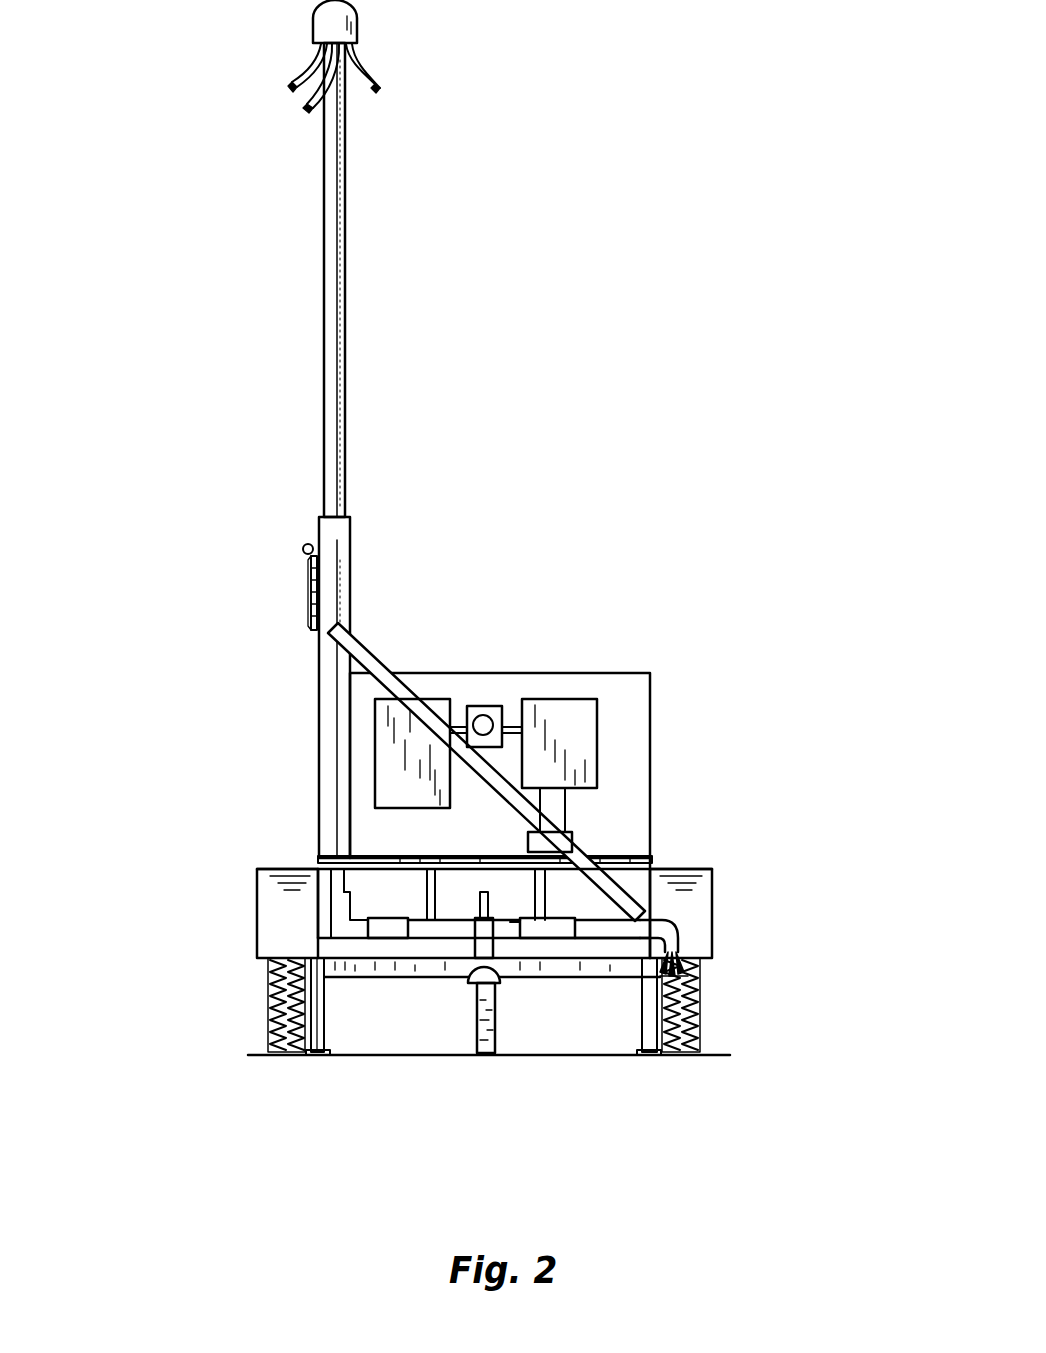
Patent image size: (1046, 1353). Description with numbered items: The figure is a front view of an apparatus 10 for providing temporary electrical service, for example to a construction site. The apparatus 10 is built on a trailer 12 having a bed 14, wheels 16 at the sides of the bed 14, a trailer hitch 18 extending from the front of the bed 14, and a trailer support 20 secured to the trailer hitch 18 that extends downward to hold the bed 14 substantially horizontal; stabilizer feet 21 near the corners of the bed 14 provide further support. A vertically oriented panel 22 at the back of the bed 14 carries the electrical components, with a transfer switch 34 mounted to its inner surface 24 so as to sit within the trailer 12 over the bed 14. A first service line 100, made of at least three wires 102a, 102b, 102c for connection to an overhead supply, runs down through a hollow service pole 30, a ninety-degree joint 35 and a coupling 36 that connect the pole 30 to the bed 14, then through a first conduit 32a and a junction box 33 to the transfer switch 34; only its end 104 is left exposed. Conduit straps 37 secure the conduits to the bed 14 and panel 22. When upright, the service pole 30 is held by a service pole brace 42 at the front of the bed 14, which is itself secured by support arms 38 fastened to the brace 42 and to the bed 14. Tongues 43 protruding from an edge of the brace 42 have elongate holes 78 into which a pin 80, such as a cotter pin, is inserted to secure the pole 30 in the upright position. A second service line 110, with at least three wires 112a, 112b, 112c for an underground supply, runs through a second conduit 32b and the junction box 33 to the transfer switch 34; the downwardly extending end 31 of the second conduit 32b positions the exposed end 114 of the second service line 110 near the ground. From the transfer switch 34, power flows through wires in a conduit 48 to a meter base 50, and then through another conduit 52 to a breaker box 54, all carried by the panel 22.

The apparatus 10 is at (537, 327).
The trailer 12 is at (198, 662).
The bed 14 is at (305, 915).
The wheels 16 is at (268, 1013).
The trailer hitch 18 is at (497, 992).
The trailer support 20 is at (480, 1037).
The stabilizer feet 21 is at (313, 1058).
The panel 22 is at (665, 693).
The inner surface 24 is at (632, 782).
The service pole 30 is at (333, 283).
The downwardly extending end 31 is at (620, 930).
The first conduit 32a is at (447, 930).
The second conduit 32b is at (662, 918).
The junction box 33 is at (558, 928).
The transfer switch 34 is at (580, 713).
The 90° joint 35 is at (322, 932).
The coupling 36 is at (378, 927).
The conduit straps 37 is at (530, 840).
The support arms 38 is at (365, 660).
The service pole brace 42 is at (323, 528).
The tongues 43 is at (320, 600).
The conduit 48 is at (510, 717).
The meter base 50 is at (483, 715).
The conduit 52 is at (420, 768).
The breaker box 54 is at (382, 762).
The elongate hole 78 is at (313, 612).
The pin 80 is at (303, 548).
The first service line 100 is at (150, 16).
The wire 102a is at (367, 88).
The wire 102b is at (302, 100).
The wire 102c is at (302, 75).
The end 104 is at (410, 93).
The second service line 110 is at (830, 925).
The wire 112a is at (697, 964).
The wire 112b is at (698, 980).
The wire 112c is at (698, 984).
The end 114 is at (650, 985).